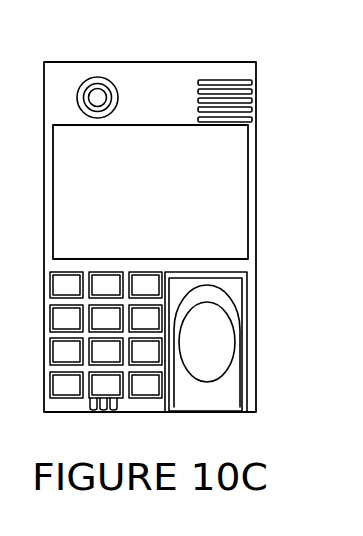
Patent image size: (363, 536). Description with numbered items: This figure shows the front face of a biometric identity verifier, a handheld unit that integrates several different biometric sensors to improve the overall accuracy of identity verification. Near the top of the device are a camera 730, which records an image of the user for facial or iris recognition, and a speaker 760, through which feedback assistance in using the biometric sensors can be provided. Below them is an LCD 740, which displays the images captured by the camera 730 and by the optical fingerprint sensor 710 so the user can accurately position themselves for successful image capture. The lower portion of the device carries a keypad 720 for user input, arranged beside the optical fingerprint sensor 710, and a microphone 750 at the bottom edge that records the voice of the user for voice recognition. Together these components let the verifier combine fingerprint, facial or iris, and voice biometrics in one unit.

The optical fingerprint sensor 710 is at (250, 383).
The keypad 720 is at (143, 273).
The camera 730 is at (120, 78).
The LCD 740 is at (248, 162).
The microphone 750 is at (115, 410).
The speaker 760 is at (242, 72).